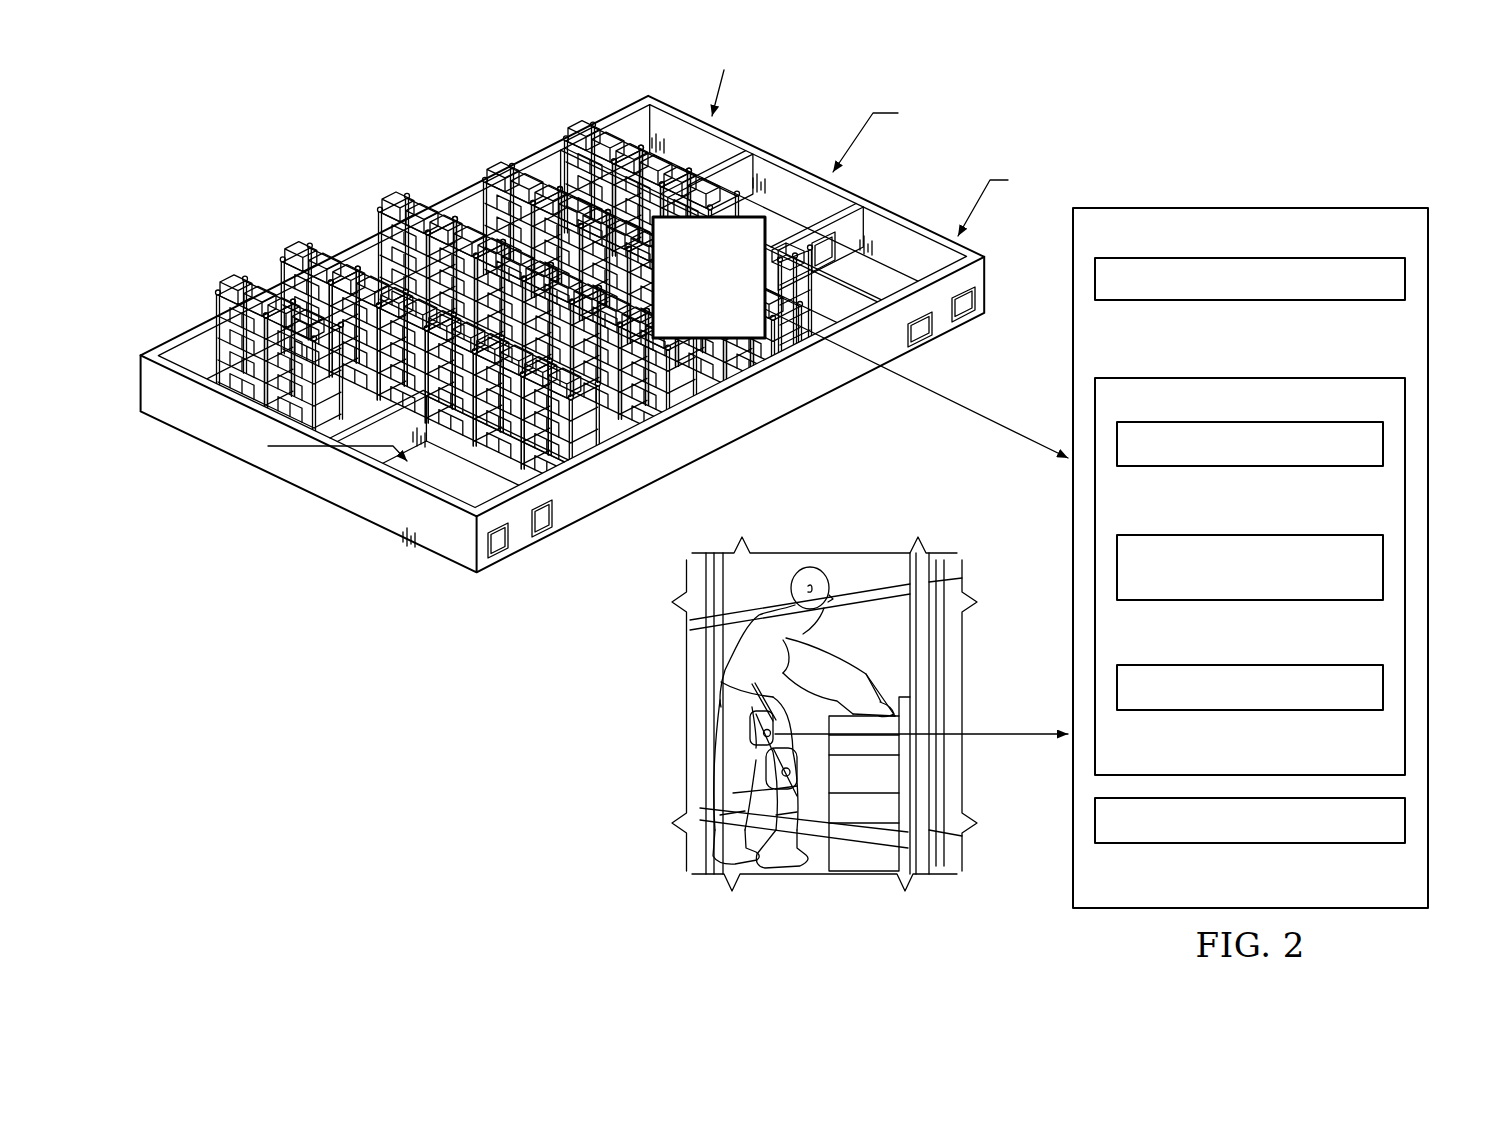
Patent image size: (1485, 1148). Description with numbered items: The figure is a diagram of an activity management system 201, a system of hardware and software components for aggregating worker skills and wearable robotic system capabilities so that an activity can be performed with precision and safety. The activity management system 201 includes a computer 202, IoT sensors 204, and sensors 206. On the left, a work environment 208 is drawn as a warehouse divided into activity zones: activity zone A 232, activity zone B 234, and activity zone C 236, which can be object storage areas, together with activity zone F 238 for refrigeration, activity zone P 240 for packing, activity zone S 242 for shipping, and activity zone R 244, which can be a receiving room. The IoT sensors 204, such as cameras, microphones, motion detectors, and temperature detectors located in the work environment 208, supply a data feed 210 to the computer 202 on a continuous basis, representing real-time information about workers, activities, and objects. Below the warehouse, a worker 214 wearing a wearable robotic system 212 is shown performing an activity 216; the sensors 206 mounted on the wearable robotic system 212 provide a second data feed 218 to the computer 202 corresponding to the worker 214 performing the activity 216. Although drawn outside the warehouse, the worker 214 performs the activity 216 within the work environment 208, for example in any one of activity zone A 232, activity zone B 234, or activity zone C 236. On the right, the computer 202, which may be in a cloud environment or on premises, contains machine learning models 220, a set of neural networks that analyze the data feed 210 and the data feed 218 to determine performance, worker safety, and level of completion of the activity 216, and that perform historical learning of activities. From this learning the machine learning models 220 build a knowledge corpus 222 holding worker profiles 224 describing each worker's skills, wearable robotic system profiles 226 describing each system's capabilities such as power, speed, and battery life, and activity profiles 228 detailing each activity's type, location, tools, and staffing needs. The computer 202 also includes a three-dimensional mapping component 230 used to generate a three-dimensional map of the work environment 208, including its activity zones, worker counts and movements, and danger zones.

The activity management system 201 is at (1155, 152).
The computer 202 is at (1290, 206).
The IoT sensors 204 is at (686, 319).
The sensors 206 is at (742, 772).
The work environment 208 is at (350, 507).
The data feed 210 is at (1002, 430).
The wearable robotic system 212 is at (714, 671).
The worker 214 is at (832, 600).
The activity 216 is at (675, 891).
The data feed 218 is at (1022, 737).
The machine learning models 220 is at (1212, 300).
The knowledge corpus 222 is at (1290, 377).
The worker profiles 224 is at (1258, 468).
The wearable robotic system profiles 226 is at (1250, 602).
The activity profiles 228 is at (1250, 712).
The 3D mapping component 230 is at (1250, 845).
The activity zone A 232 is at (282, 300).
The activity zone B 234 is at (507, 190).
The activity zone C 236 is at (661, 396).
The activity zone F 238 is at (616, 140).
The activity zone P 240 is at (783, 192).
The activity zone S 242 is at (892, 244).
The activity zone R 244 is at (520, 476).